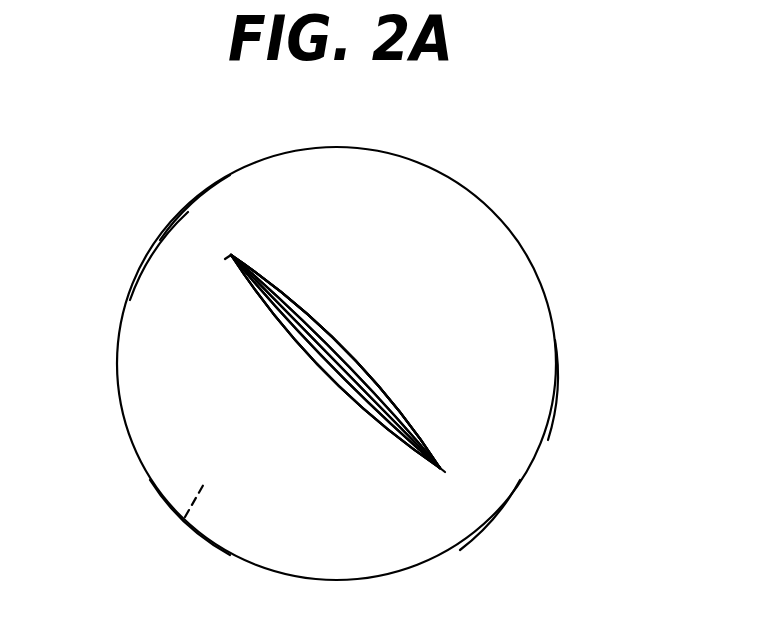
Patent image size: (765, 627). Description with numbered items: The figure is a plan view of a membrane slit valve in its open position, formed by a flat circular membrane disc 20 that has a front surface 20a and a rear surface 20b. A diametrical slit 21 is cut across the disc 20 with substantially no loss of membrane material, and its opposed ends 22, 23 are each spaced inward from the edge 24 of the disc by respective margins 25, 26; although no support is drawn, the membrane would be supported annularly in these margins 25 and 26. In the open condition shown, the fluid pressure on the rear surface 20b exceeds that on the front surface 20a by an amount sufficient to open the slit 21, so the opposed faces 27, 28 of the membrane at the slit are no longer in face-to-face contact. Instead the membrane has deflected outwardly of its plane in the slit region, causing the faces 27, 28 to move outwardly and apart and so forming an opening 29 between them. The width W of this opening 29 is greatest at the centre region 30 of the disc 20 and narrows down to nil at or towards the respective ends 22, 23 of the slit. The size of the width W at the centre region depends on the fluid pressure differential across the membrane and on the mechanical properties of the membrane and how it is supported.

The membrane disc 20 is at (554, 203).
The front surface 20a is at (167, 297).
The rear surface 20b is at (185, 517).
The diametrical slit 21 is at (388, 413).
The first end of slit 22 is at (232, 253).
The second end of slit 23 is at (443, 472).
The edge of disc 24 is at (548, 423).
The first margin 25 is at (200, 230).
The second margin 26 is at (467, 498).
The first opposed face 27 is at (298, 331).
The second opposed face 28 is at (376, 392).
The opening 29 is at (344, 376).
The centre region 30 is at (335, 357).
The width of opening W is at (342, 371).